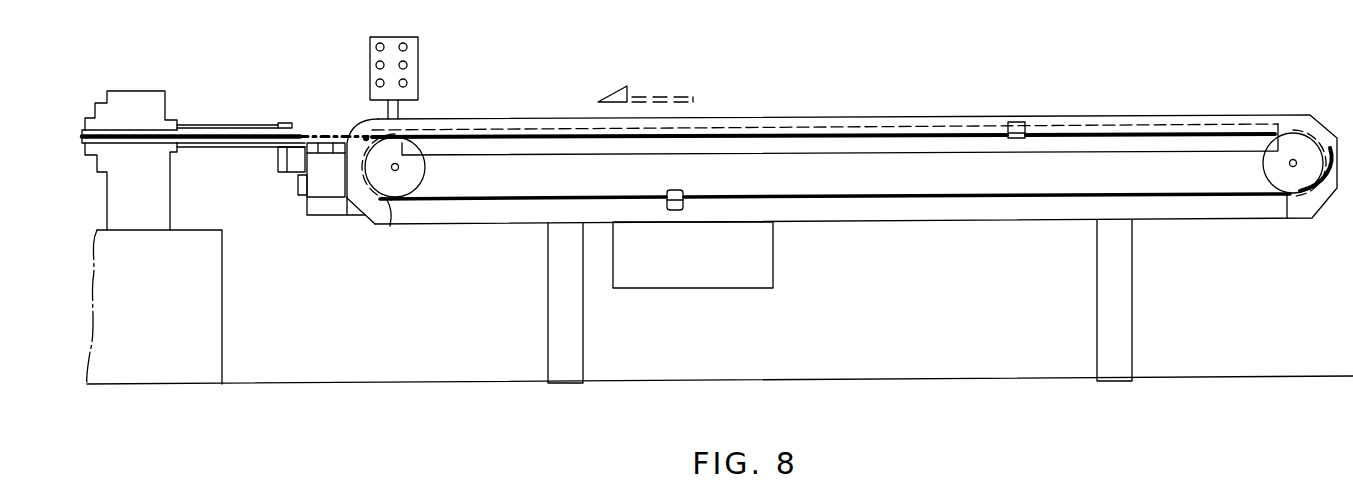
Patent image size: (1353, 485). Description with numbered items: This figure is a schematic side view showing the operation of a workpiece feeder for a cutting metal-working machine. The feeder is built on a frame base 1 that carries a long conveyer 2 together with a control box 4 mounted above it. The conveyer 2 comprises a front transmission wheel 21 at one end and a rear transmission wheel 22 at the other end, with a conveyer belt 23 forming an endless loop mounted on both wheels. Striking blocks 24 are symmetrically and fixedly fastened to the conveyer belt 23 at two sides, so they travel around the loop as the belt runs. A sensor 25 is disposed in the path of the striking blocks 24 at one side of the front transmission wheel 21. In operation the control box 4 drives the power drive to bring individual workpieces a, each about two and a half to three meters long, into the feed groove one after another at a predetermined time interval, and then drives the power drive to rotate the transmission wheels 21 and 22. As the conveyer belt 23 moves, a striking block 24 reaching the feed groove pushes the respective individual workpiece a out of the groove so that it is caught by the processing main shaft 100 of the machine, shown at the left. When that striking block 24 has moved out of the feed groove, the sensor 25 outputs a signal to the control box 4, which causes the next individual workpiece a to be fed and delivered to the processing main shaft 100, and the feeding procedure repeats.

The processing main shaft 100 is at (158, 113).
The individual workpiece a is at (252, 127).
The sensor 25 is at (366, 138).
The control box 4 is at (413, 63).
The frame base 1 is at (738, 145).
The conveyer 2 is at (847, 205).
The conveyer belt 23 is at (977, 195).
The front transmission wheel 21 is at (388, 226).
The rear transmission wheel 22 is at (1288, 195).
The striking block 24 is at (1017, 120).